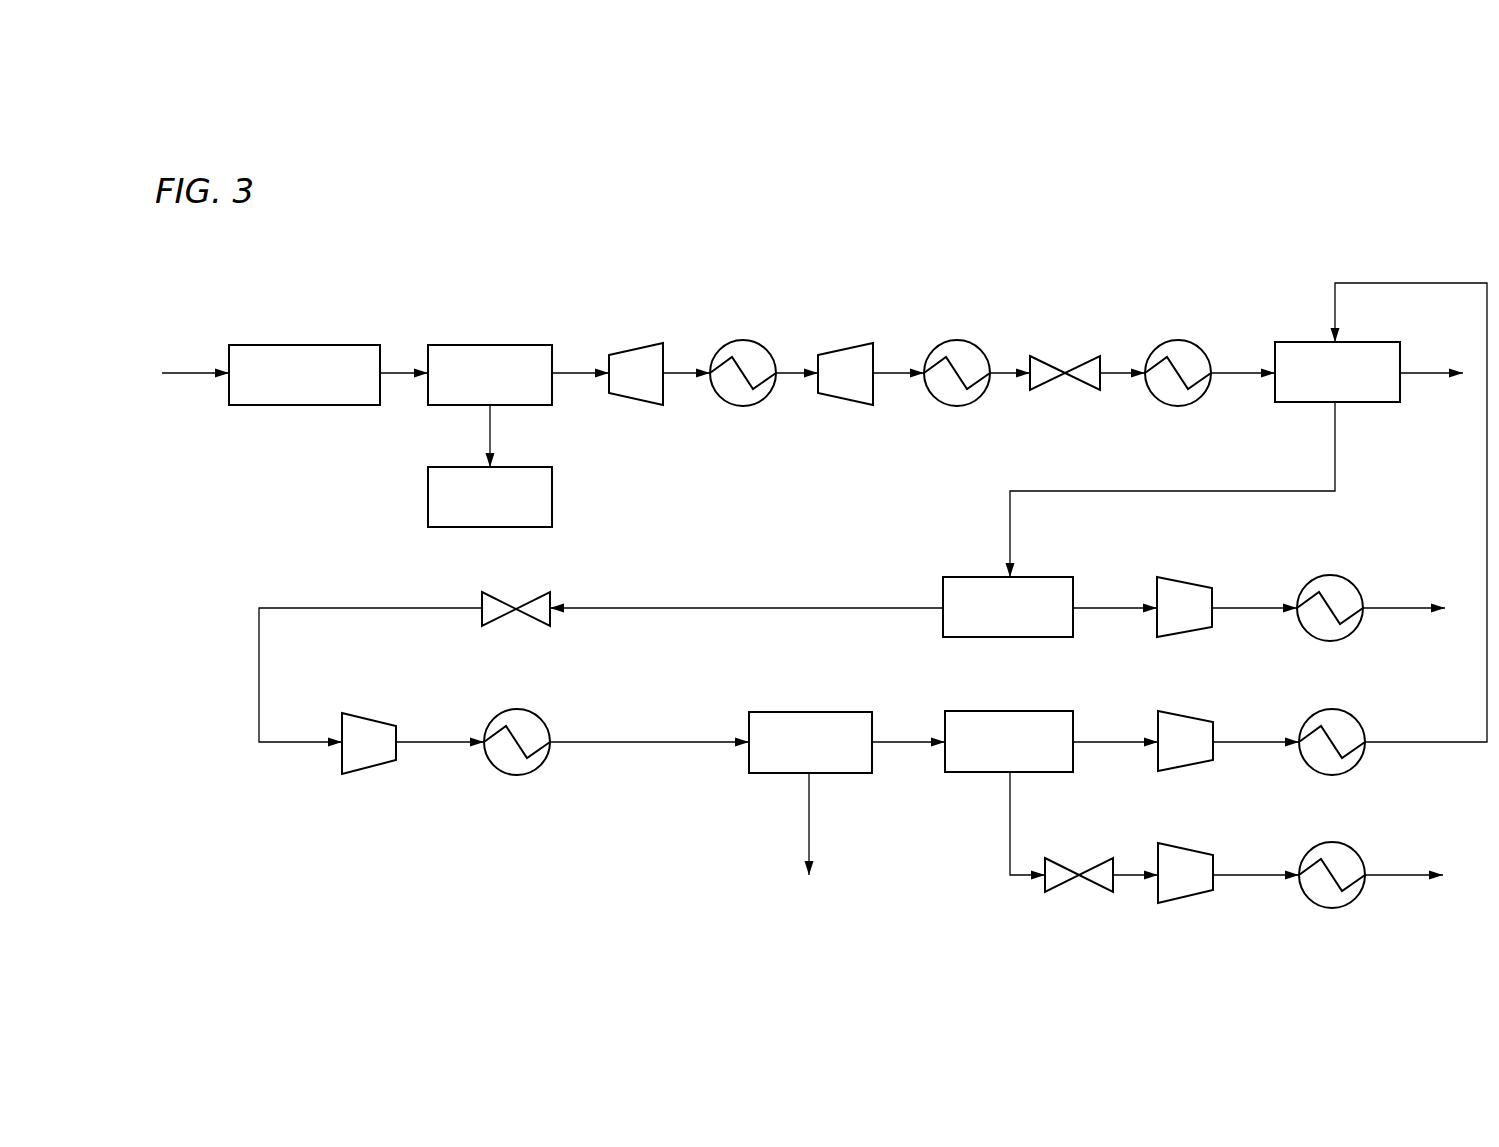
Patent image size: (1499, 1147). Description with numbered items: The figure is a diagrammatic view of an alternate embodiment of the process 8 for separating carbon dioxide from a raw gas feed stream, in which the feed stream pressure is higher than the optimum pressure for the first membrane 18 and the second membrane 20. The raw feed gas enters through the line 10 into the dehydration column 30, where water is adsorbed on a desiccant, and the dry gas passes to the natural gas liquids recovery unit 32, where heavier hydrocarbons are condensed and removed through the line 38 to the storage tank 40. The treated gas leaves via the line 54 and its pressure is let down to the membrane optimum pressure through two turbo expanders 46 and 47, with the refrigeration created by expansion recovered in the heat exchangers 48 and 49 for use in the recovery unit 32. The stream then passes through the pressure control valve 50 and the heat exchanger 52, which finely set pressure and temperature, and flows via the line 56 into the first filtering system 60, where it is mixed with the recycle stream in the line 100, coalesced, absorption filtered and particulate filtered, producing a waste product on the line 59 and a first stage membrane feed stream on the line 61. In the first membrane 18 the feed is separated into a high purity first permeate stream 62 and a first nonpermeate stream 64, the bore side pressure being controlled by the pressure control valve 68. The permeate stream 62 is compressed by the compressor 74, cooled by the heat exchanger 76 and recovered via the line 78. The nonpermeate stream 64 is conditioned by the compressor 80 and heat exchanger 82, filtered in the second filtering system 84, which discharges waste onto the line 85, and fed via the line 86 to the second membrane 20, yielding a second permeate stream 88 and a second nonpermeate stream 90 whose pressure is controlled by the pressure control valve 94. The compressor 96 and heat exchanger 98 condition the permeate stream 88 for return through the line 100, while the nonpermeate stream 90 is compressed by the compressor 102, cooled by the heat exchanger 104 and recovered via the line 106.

The process 8 is at (227, 299).
The line 10 is at (191, 373).
The first membrane 18 is at (960, 577).
The second membrane 20 is at (1020, 711).
The dehydration column 30 is at (303, 345).
The natural gas liquids (NGL) recovery unit 32 is at (457, 345).
The line 38 is at (490, 420).
The storage tank 40 is at (428, 493).
The turbo expander 46 is at (634, 352).
The turbo expander 47 is at (843, 352).
The heat exchanger 48 is at (748, 345).
The heat exchanger 49 is at (957, 340).
The pressure control valve 50 is at (1045, 356).
The heat exchanger 52 is at (1178, 340).
The line 54 is at (569, 373).
The line 56 is at (1237, 373).
The line 59 is at (1425, 373).
The first filtering system 60 is at (1288, 398).
The line 61 is at (1337, 464).
The first permeate stream 62 is at (1098, 608).
The first nonpermeate stream 64 is at (758, 608).
The pressure control valve 68 is at (495, 600).
The compressor 74 is at (1182, 585).
The heat exchanger 76 is at (1330, 576).
The line 78 is at (1397, 608).
The compressor 80 is at (365, 722).
The heat exchanger 82 is at (525, 715).
The second filtering system 84 is at (808, 712).
The line 85 is at (809, 805).
The line 86 is at (895, 742).
The second permeate stream 88 is at (1098, 742).
The second nonpermeate stream 90 is at (1010, 813).
The pressure control valve 94 is at (1060, 865).
The compressor 96 is at (1188, 720).
The heat exchanger 98 is at (1340, 712).
The line 100 is at (1385, 283).
The compressor 102 is at (1195, 855).
The heat exchanger 104 is at (1340, 848).
The line 106 is at (1393, 875).